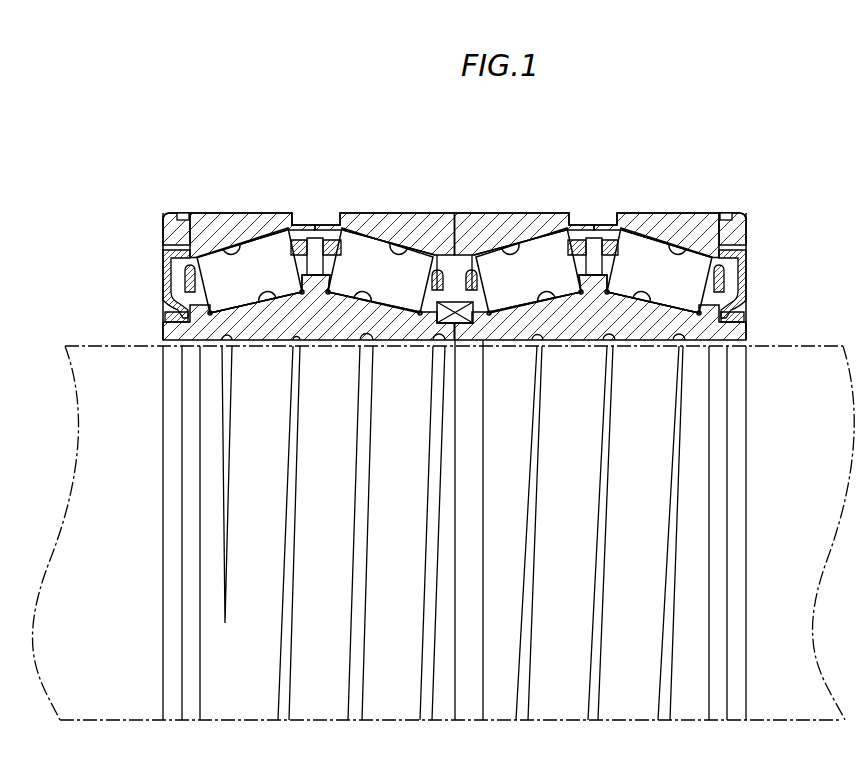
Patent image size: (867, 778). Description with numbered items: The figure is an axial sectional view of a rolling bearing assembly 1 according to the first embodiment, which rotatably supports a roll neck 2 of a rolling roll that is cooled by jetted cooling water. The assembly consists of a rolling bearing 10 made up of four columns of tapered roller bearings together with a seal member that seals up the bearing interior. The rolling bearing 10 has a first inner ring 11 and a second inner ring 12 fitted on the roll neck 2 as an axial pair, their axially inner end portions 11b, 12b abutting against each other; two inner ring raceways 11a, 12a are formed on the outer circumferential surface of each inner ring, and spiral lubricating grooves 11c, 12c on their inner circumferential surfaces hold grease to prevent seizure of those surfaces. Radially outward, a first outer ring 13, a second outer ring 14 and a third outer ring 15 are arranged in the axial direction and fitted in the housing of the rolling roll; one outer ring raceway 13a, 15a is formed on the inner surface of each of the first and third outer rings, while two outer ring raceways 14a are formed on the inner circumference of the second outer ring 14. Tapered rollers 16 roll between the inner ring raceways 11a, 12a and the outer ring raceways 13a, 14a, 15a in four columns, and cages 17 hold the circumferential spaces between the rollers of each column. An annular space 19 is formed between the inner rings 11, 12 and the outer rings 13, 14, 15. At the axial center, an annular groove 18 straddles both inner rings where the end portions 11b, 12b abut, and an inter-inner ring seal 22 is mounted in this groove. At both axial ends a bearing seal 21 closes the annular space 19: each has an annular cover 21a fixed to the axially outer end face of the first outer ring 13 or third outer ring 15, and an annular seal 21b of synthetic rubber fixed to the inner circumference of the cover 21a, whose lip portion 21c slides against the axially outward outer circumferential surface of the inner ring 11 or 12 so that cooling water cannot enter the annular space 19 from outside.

The rolling bearing assembly 1 is at (710, 156).
The roll neck 2 is at (834, 344).
The rolling bearing 10 is at (368, 194).
The first inner ring 11 is at (263, 346).
The inner ring raceway 11a is at (362, 298).
The axially inner end portion 11b is at (457, 333).
The spiral lubricating groove 11c is at (285, 663).
The second inner ring 12 is at (650, 346).
The inner ring raceway 12a is at (547, 298).
The axially inner end portion 12b is at (436, 325).
The spiral lubricating groove 12c is at (700, 482).
The first outer ring 13 is at (253, 212).
The outer ring raceway 13a is at (228, 246).
The second outer ring 14 is at (455, 210).
The outer ring raceway 14a is at (403, 245).
The third outer ring 15 is at (657, 208).
The outer ring raceway 15a is at (681, 246).
The tapered roller 16 is at (268, 246).
The cage 17 is at (327, 238).
The annular groove 18 is at (474, 310).
The annular space 19 is at (450, 262).
The bearing seal 21 is at (162, 270).
The annular cover 21a is at (168, 232).
The annular seal 21b is at (168, 285).
The lip portion 21c is at (168, 312).
The inter-inner ring seal 22 is at (455, 300).